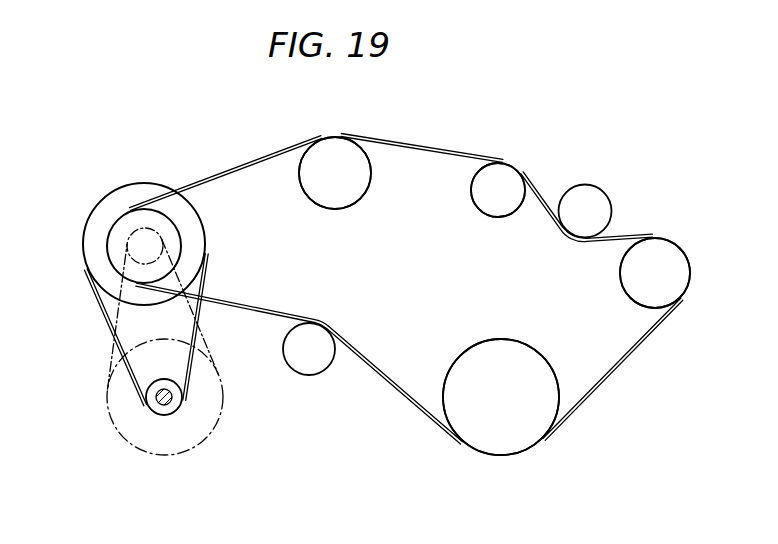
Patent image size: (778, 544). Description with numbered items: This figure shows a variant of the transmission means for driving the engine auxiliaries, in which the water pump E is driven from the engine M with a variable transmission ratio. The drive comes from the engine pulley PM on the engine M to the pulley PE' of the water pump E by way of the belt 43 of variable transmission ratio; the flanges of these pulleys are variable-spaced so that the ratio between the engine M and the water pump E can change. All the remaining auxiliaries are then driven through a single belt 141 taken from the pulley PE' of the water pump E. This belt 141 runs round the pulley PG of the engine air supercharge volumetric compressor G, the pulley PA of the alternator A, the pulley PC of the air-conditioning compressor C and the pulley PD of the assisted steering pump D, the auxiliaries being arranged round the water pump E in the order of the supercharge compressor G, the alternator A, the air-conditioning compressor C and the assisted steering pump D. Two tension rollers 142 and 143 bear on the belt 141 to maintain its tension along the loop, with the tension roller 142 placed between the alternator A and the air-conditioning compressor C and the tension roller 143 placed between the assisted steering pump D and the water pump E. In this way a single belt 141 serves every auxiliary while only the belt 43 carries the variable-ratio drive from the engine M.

The water pump E is at (156, 181).
The pulley of water pump E PE' is at (110, 220).
The engine air supercharge volumetric compressor G is at (331, 134).
The pulley of supercharge compressor G PG is at (332, 200).
The alternator A is at (516, 163).
The pulley of alternator A PA is at (488, 203).
The tension roller 142 is at (595, 197).
The air-conditioning compressor C is at (682, 239).
The pulley of air-conditioning compressor C PC is at (630, 275).
The assisted steering pump D is at (507, 460).
The pulley of assisted steering pump D PD is at (495, 350).
The tension roller 143 is at (313, 367).
The single belt 141 is at (424, 147).
The belt of variable transmission ratio 43 is at (108, 310).
The engine pulley PM is at (152, 412).
The engine M is at (173, 403).